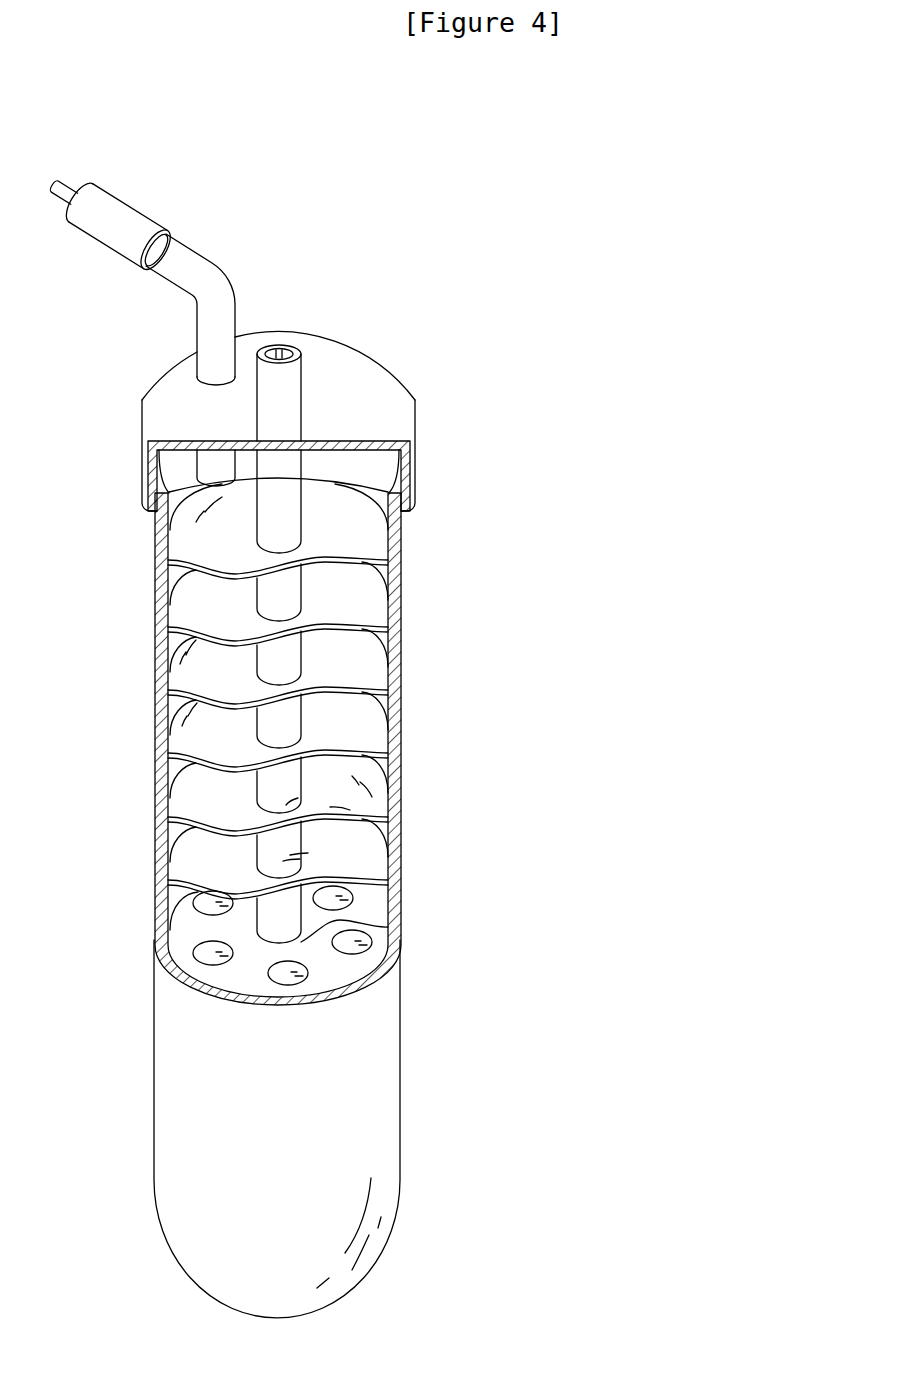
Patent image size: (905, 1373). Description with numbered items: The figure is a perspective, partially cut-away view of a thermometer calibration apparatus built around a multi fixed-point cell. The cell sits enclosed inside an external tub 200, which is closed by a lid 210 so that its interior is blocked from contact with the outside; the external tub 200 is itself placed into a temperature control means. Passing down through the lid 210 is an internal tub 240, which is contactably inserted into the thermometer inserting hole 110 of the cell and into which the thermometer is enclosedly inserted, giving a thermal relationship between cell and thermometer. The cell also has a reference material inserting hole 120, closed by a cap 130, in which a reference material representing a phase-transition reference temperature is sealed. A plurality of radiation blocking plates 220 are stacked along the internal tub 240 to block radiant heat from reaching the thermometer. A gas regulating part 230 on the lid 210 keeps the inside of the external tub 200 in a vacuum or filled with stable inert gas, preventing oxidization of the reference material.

The thermometer inserting hole 110 is at (388, 930).
The reference material inserting hole 120 is at (292, 986).
The cap for the reference material inserting hole 130 is at (156, 963).
The external tub 200 is at (402, 703).
The lid 210 is at (402, 392).
The radiation blocking plate 220 is at (374, 798).
The gas regulating part 230 is at (128, 190).
The internal tub 240 is at (302, 606).